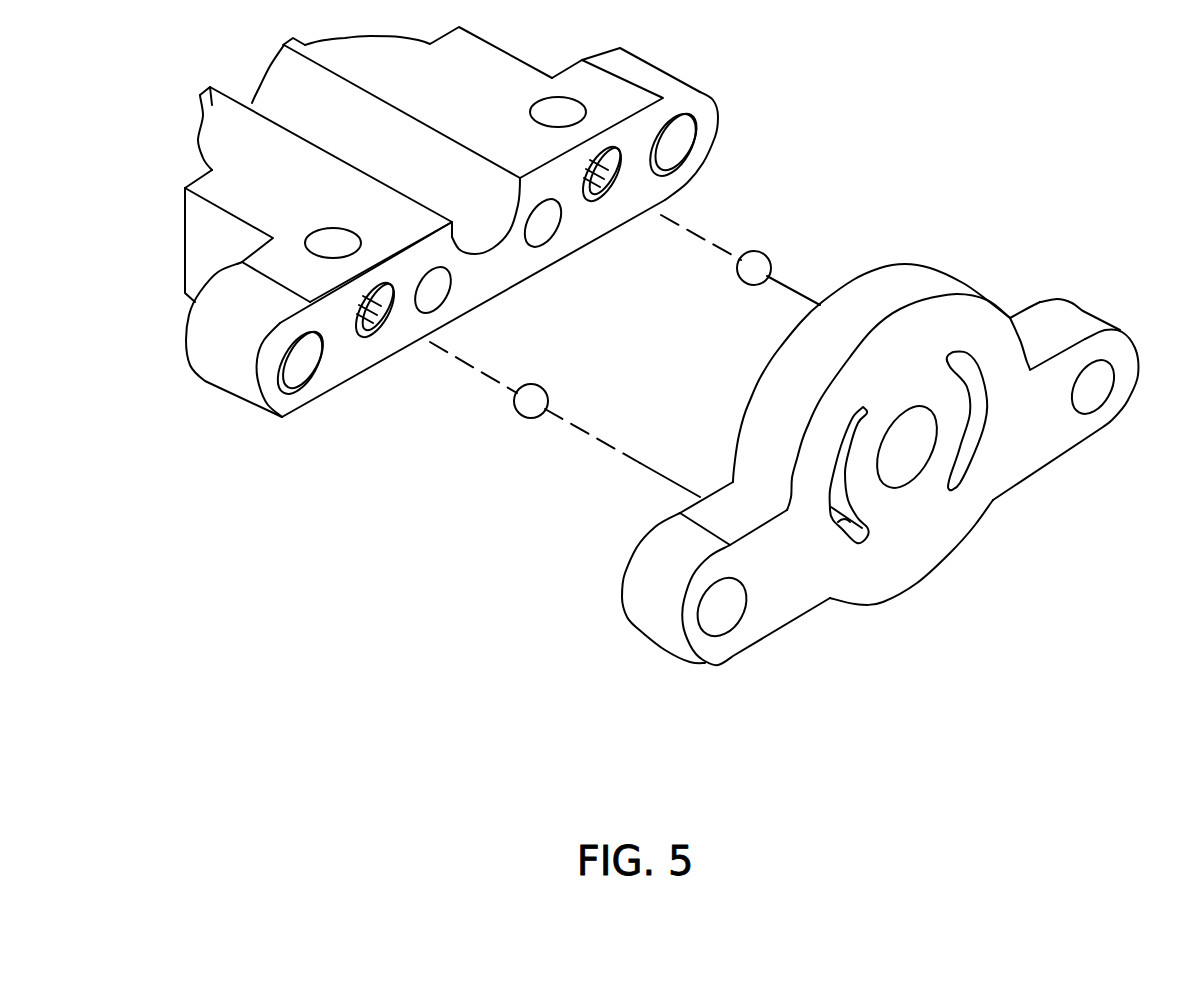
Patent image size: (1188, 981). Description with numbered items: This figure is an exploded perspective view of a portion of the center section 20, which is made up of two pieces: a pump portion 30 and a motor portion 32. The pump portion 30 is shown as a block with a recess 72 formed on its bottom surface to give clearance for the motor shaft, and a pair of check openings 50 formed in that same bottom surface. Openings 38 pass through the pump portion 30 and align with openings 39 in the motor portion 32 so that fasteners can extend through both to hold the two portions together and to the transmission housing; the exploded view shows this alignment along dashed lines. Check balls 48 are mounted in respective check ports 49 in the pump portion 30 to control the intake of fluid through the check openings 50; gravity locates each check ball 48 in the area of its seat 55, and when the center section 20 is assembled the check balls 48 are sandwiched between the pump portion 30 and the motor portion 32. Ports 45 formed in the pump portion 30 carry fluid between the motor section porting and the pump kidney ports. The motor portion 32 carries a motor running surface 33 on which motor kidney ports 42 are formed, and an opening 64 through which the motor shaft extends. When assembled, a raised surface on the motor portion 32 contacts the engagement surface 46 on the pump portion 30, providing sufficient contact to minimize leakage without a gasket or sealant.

The center section 20 is at (957, 65).
The pump portion 30 is at (210, 349).
The motor portion 32 is at (640, 598).
The motor running surface 33 is at (893, 544).
The openings 38 is at (681, 130).
The openings 39 is at (1100, 375).
The motor kidney ports 42 is at (975, 433).
The ports 45 is at (433, 290).
The engagement surface 46 is at (342, 372).
The check balls 48 is at (753, 260).
The check ports 49 is at (615, 170).
The check openings 50 is at (558, 110).
The seat 55 is at (615, 170).
The opening 64 is at (907, 440).
The recess 72 is at (359, 151).